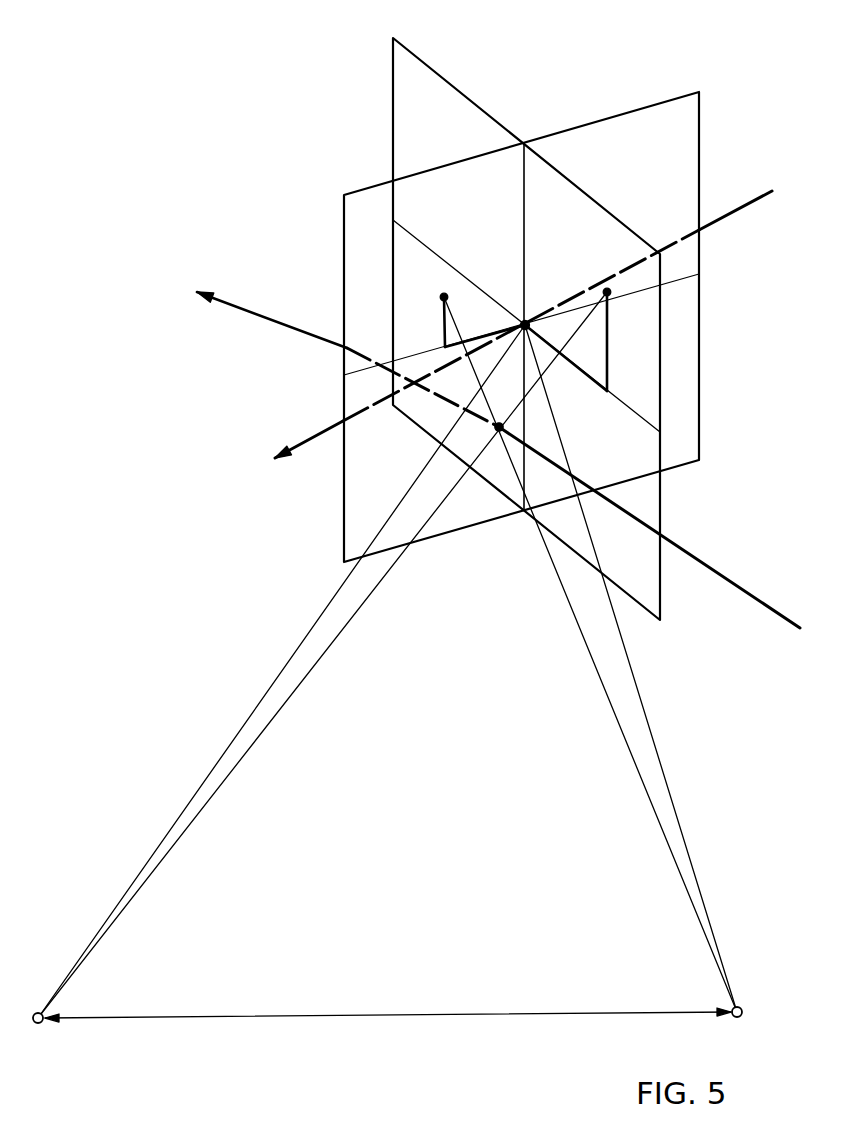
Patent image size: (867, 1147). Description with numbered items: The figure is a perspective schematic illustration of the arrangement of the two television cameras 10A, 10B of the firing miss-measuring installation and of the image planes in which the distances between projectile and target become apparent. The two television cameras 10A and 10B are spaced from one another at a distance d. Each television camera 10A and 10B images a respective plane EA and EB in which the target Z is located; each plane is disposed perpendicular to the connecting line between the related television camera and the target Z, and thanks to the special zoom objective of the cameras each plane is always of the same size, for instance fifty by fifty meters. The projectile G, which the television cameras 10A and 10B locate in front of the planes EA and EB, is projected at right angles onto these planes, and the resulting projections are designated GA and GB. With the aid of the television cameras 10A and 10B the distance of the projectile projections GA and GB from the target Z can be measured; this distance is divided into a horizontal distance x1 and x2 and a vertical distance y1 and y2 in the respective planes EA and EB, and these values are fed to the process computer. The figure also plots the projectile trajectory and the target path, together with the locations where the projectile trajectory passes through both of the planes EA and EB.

The image plane of television camera A EA is at (396, 105).
The image plane of television camera B EB is at (642, 110).
The target Z is at (528, 317).
The projectile G is at (495, 428).
The projection of the projectile onto plane EA GA is at (624, 293).
The projection of the projectile onto plane EB GB is at (433, 281).
The horizontal distance x1 is at (566, 360).
The vertical distance y1 is at (622, 341).
The horizontal distance x2 is at (485, 327).
The vertical distance y2 is at (430, 322).
The distance between television cameras d is at (388, 1004).
The television camera 10A is at (51, 1037).
The television camera 10B is at (748, 1030).